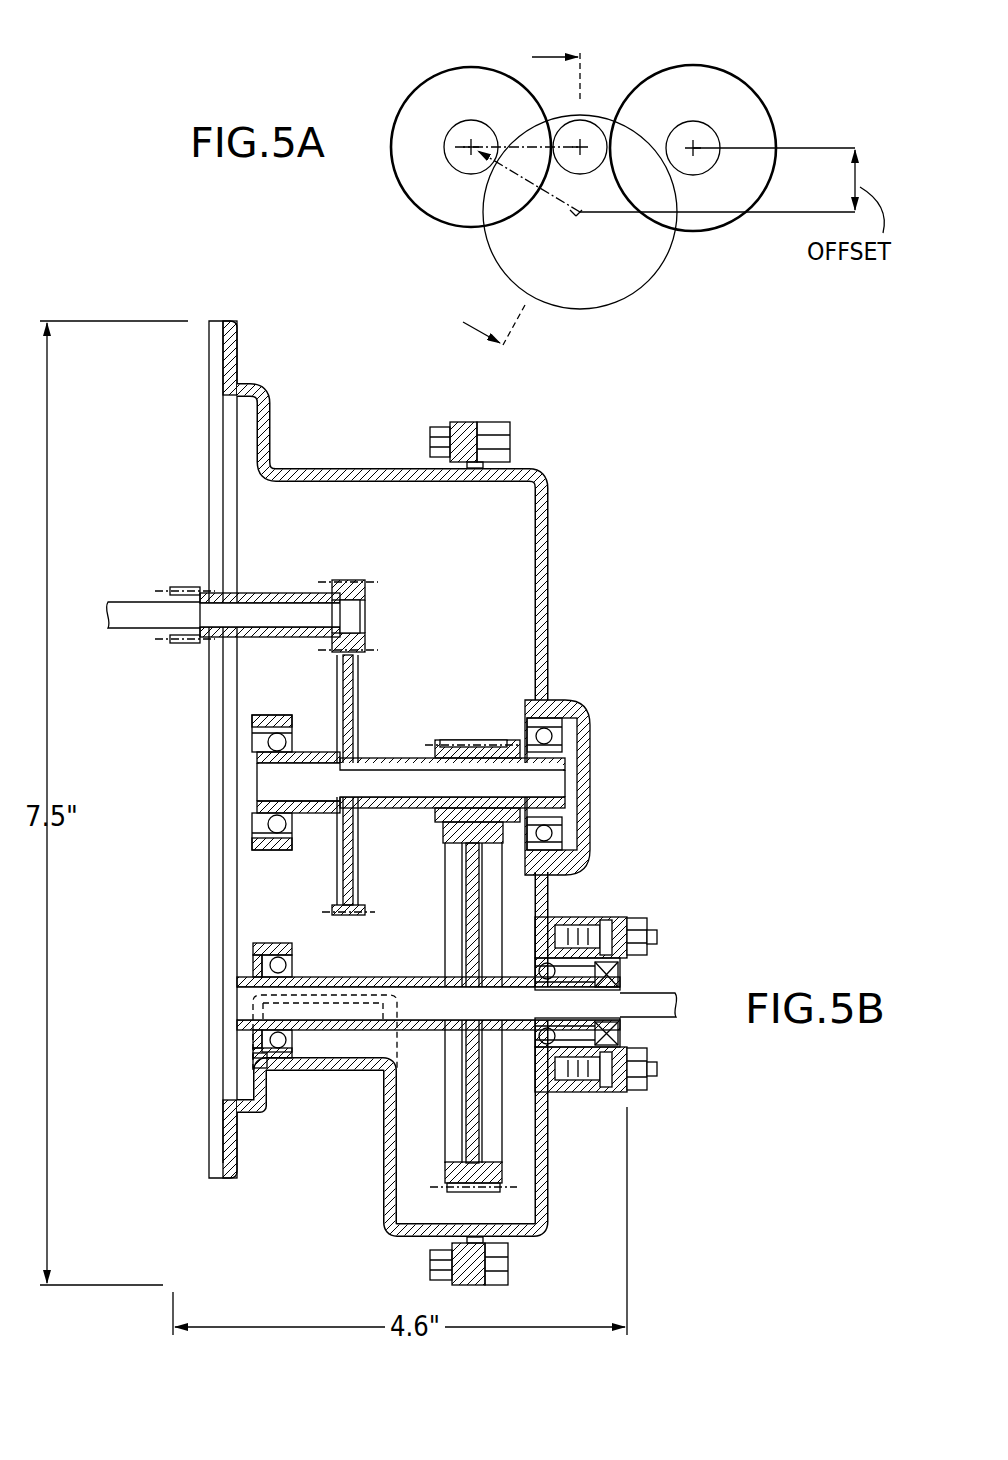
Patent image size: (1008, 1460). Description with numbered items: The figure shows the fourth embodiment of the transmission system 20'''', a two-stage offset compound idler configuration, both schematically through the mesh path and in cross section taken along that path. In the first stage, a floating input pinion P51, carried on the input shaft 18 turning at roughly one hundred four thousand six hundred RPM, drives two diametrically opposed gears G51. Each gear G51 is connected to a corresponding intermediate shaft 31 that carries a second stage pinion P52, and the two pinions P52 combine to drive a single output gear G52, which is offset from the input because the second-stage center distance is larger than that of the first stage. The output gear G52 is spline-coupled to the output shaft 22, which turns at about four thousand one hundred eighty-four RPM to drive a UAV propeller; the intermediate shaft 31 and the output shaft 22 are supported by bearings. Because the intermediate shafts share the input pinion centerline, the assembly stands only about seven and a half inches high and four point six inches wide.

In FIG. 5A, the gear G51 is at (450, 68).
In FIG. 5B, the gear G51 is at (360, 707).
In FIG. 5A, the floating input pinion P51 is at (567, 121).
In FIG. 5B, the floating input pinion P51 is at (357, 580).
In FIG. 5A, the second stage pinion P52 is at (443, 158).
In FIG. 5B, the second stage pinion P52 is at (487, 740).
In FIG. 5A, the output gear G52 is at (492, 260).
In FIG. 5B, the output gear G52 is at (498, 1170).
In FIG. 5B, the input shaft 18 is at (135, 630).
In FIG. 5B, the intermediate shaft 31 is at (405, 808).
In FIG. 5B, the output shaft 22 is at (643, 1017).
In FIG. 5A, the transmission system 20'''' is at (669, 206).
In FIG. 5B, the transmission system 20'''' is at (458, 837).